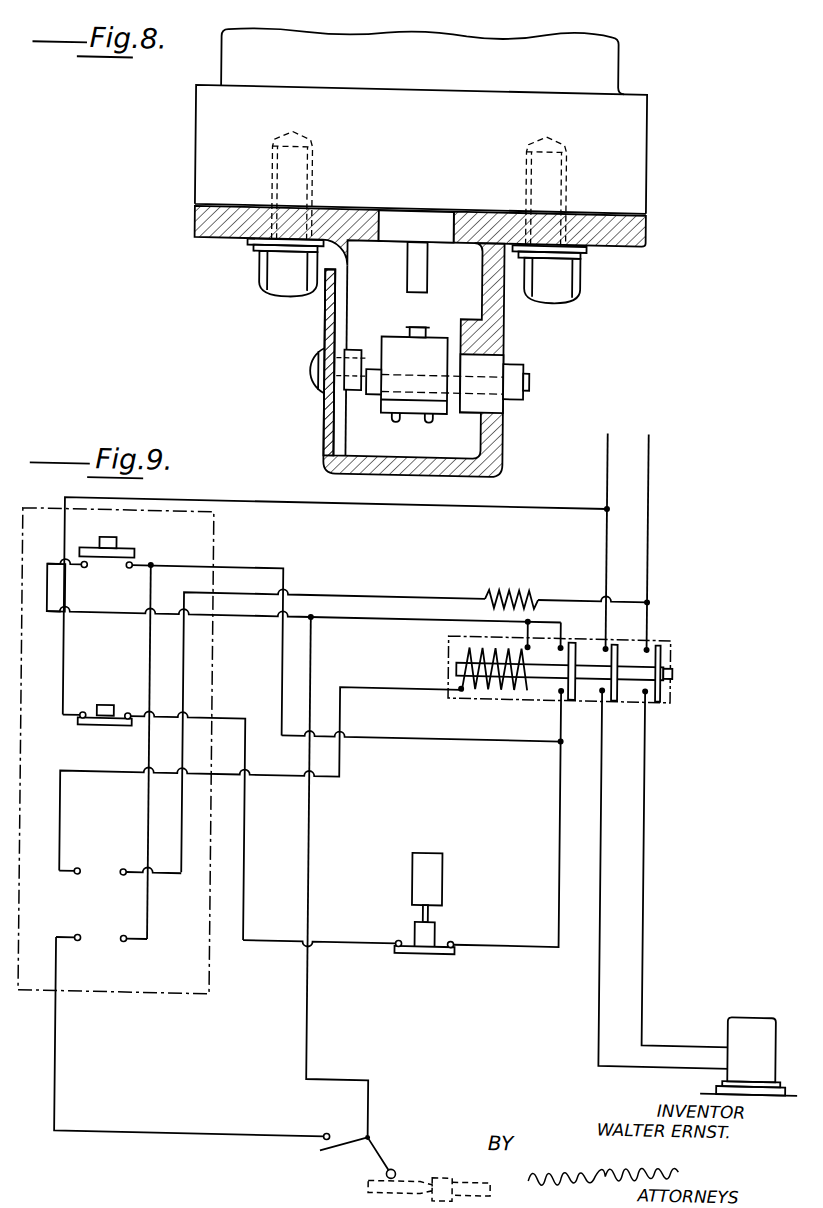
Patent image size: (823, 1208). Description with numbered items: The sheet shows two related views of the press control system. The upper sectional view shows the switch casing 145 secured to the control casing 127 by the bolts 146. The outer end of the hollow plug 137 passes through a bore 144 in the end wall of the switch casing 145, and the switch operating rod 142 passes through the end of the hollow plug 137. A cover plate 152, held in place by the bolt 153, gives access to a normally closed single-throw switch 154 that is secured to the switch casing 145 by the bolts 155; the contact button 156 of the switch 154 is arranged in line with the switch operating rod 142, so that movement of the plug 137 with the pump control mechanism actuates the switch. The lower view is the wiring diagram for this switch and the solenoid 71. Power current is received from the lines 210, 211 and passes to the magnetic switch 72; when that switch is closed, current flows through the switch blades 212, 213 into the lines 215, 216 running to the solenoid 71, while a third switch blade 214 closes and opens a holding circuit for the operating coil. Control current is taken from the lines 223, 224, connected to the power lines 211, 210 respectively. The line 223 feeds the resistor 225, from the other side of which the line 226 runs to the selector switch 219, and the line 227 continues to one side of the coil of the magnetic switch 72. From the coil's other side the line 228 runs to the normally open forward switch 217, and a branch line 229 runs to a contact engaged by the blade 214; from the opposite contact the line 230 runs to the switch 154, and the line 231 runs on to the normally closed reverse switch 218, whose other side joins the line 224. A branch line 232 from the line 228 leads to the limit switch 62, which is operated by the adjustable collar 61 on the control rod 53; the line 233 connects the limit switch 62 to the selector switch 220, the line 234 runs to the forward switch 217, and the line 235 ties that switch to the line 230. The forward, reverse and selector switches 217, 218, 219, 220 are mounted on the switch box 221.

In FIG. 8, the control casing 127 is at (208, 132).
In FIG. 8, the bore 144 is at (371, 211).
In FIG. 8, the hollow plug 137 is at (423, 219).
In FIG. 9, the hollow plug 137 is at (444, 873).
In FIG. 8, the switch operating rod 142 is at (422, 277).
In FIG. 9, the switch operating rod 142 is at (425, 914).
In FIG. 8, the bolts 146 is at (263, 276).
In FIG. 8, the cover plate 152 is at (320, 328).
In FIG. 8, the switch casing 145 is at (505, 341).
In FIG. 8, the bolt 153 is at (312, 379).
In FIG. 8, the single-throw switch 154 is at (430, 349).
In FIG. 9, the single-throw switch 154 is at (437, 935).
In FIG. 8, the bolts 155 is at (522, 381).
In FIG. 8, the contact button 156 is at (403, 330).
In FIG. 9, the power line 210 is at (605, 457).
In FIG. 9, the power line 211 is at (646, 456).
In FIG. 9, the switch blade 212 is at (615, 697).
In FIG. 9, the switch blade 213 is at (662, 651).
In FIG. 9, the third switch blade 214 is at (572, 698).
In FIG. 9, the magnetic switch 72 is at (673, 685).
In FIG. 9, the line 215 is at (603, 816).
In FIG. 9, the line 216 is at (647, 773).
In FIG. 9, the solenoid 71 is at (757, 1012).
In FIG. 9, the forward switch 217 is at (133, 553).
In FIG. 9, the reverse switch 218 is at (104, 713).
In FIG. 9, the selector switch 219 is at (100, 876).
In FIG. 9, the selector switch 220 is at (100, 942).
In FIG. 9, the switch box 221 is at (213, 536).
In FIG. 9, the line 223 is at (549, 596).
In FIG. 9, the line 224 is at (470, 506).
In FIG. 9, the resistor 225 is at (508, 589).
In FIG. 9, the line 226 is at (386, 596).
In FIG. 9, the line 227 is at (366, 690).
In FIG. 9, the line 228 is at (83, 620).
In FIG. 9, the branch line 229 is at (557, 628).
In FIG. 9, the line 230 is at (560, 722).
In FIG. 9, the line 231 is at (312, 950).
In FIG. 9, the branch line 232 is at (311, 1049).
In FIG. 9, the line 233 is at (186, 1136).
In FIG. 9, the line 234 is at (150, 934).
In FIG. 9, the line 235 is at (484, 741).
In FIG. 9, the limit switch 62 is at (384, 1155).
In FIG. 9, the adjustable collar 61 is at (443, 1178).
In FIG. 9, the control rod 53 is at (478, 1175).